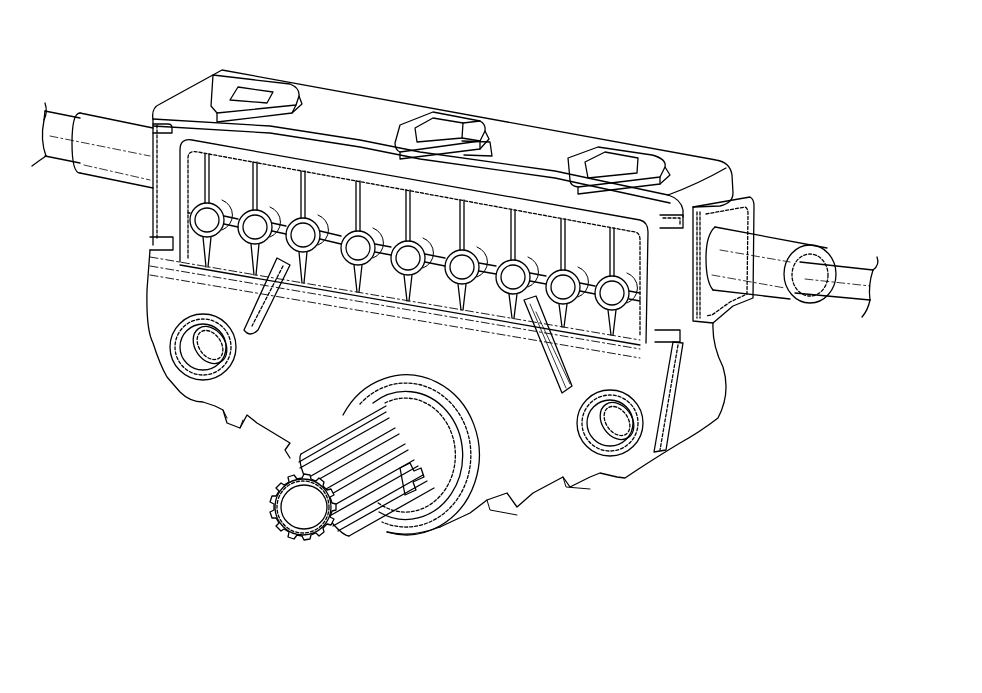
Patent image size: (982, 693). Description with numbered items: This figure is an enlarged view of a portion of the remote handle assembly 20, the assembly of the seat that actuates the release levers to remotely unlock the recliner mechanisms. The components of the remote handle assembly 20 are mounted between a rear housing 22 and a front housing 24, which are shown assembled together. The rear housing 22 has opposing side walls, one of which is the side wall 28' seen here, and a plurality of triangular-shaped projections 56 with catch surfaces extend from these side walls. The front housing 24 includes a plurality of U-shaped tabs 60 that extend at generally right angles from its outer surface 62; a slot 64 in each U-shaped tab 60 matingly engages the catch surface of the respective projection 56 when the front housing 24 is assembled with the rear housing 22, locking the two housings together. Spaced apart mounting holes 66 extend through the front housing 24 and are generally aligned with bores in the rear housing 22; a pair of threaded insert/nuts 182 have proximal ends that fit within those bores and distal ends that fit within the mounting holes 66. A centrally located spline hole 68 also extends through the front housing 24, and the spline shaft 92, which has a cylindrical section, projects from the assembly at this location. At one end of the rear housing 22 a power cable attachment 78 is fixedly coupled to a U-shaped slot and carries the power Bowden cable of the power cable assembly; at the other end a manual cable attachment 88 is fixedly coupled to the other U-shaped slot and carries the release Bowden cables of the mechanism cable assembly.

The remote handle assembly 20 is at (690, 114).
The rear housing 22 is at (322, 86).
The front housing 24 is at (206, 403).
The side wall 28' is at (618, 130).
The triangular-shaped projection 56 is at (440, 133).
The U-shaped tab 60 is at (472, 124).
The outer surface 62 is at (491, 399).
The slot 64 is at (412, 130).
The mounting hole 66 is at (185, 352).
The spline hole 68 is at (385, 405).
The power cable attachment 78 is at (123, 135).
The manual cable attachment 88 is at (767, 253).
The spline shaft 92 is at (309, 555).
The threaded insert/nut 182 is at (188, 365).